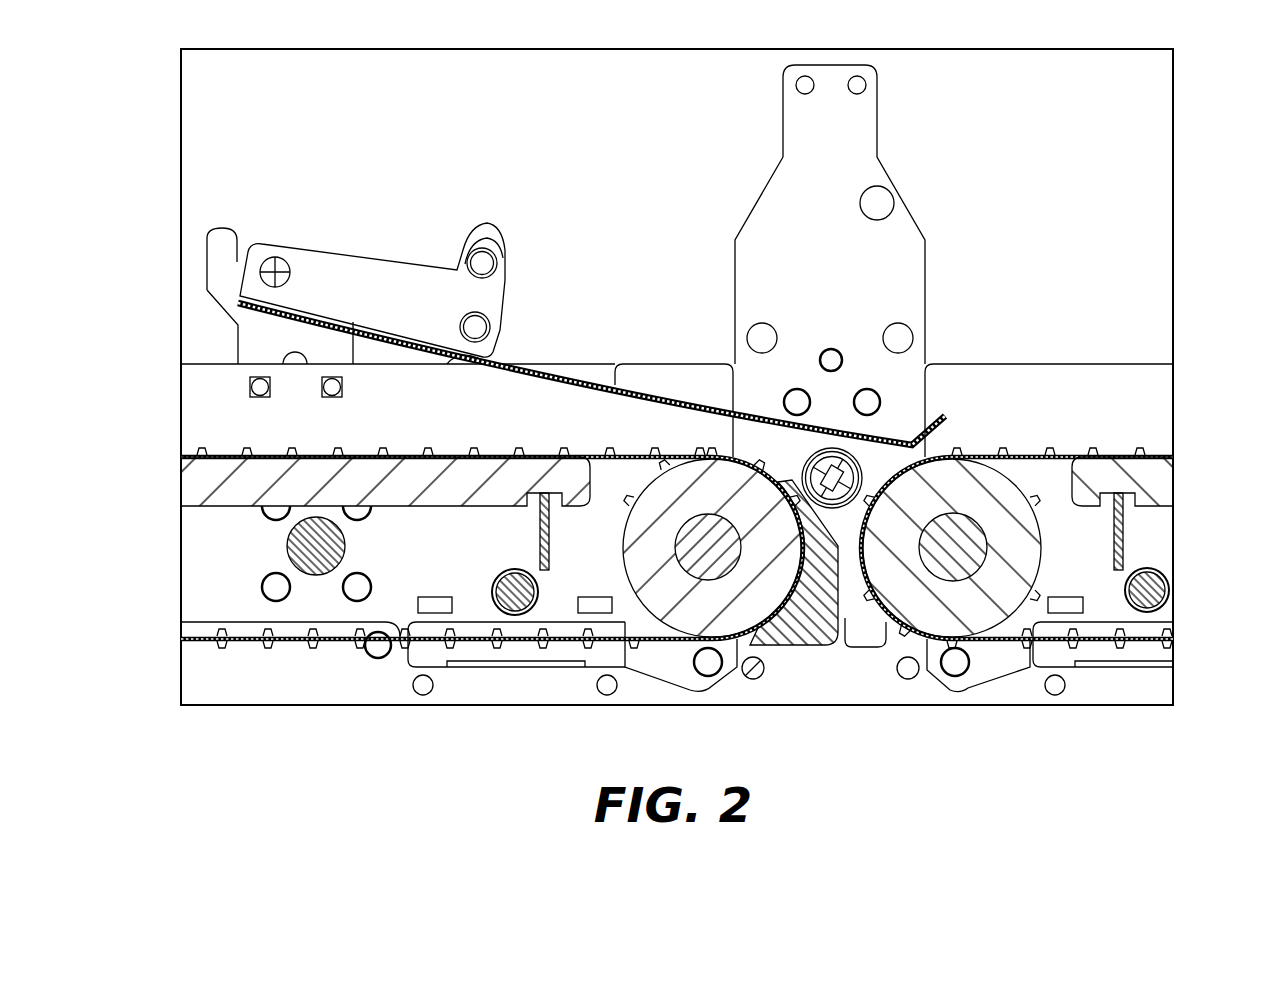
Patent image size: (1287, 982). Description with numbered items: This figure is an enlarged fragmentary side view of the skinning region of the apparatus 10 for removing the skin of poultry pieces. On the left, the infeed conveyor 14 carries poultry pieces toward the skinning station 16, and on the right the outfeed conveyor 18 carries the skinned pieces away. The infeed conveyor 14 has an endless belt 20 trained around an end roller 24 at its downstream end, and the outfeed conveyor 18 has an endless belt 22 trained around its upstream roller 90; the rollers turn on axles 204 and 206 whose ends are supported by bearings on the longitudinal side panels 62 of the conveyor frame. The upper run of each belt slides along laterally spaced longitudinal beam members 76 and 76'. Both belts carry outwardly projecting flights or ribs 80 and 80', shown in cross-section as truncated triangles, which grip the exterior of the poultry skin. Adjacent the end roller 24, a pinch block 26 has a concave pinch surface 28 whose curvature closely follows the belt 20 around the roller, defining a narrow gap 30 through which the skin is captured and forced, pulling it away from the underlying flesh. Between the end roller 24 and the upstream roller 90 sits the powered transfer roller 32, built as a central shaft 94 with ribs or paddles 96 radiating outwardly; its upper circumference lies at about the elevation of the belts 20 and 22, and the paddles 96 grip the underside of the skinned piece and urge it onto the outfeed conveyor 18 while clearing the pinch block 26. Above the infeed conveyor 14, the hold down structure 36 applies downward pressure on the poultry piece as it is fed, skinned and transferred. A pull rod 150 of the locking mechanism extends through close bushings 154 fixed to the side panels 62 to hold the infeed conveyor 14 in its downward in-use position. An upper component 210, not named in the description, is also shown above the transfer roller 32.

The apparatus 10 is at (276, 132).
The infeed conveyor 14 is at (200, 653).
The skinning station 16 is at (937, 716).
The outfeed conveyor 18 is at (1188, 590).
The endless belt 20 is at (200, 462).
The endless belt 22 is at (1130, 452).
The end roller 24 is at (663, 612).
The pinch block 26 is at (863, 643).
The concave pinch surface 28 is at (807, 642).
The narrow gap 30 is at (753, 673).
The transfer roller 32 is at (866, 462).
The hold down structure 36 is at (378, 243).
The longitudinal side panels 62 is at (228, 382).
The longitudinal beam members 76 is at (354, 529).
The longitudinal beam members 76' is at (1163, 513).
The flights or ribs 80 is at (411, 532).
The flights or ribs 80' is at (1101, 529).
The upstream roller 90 is at (985, 625).
The central shaft 94 is at (832, 468).
The ribs or paddles 96 is at (806, 458).
The pull rod 150 is at (500, 598).
The close bushings 154 is at (1152, 601).
The axle 204 is at (703, 530).
The axle 206 is at (970, 523).
The mounting bracket 210 is at (878, 118).